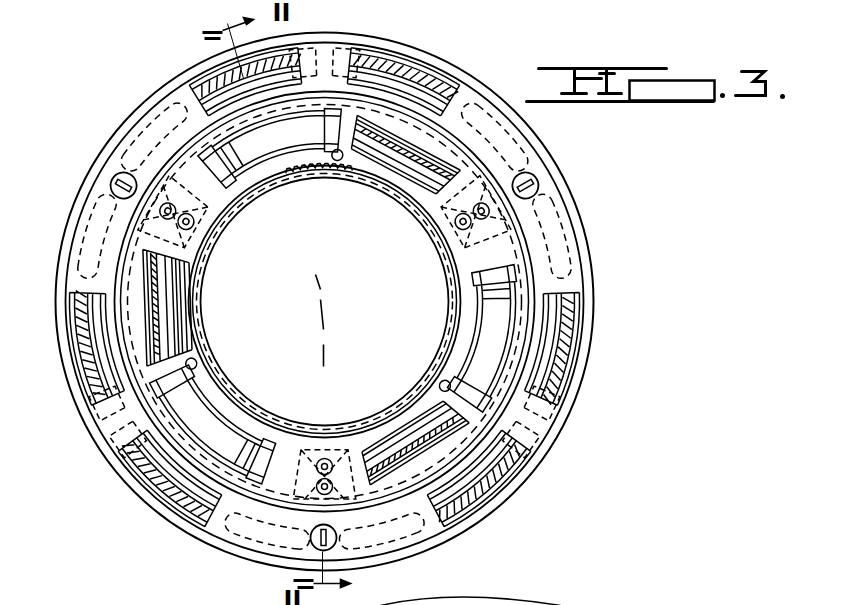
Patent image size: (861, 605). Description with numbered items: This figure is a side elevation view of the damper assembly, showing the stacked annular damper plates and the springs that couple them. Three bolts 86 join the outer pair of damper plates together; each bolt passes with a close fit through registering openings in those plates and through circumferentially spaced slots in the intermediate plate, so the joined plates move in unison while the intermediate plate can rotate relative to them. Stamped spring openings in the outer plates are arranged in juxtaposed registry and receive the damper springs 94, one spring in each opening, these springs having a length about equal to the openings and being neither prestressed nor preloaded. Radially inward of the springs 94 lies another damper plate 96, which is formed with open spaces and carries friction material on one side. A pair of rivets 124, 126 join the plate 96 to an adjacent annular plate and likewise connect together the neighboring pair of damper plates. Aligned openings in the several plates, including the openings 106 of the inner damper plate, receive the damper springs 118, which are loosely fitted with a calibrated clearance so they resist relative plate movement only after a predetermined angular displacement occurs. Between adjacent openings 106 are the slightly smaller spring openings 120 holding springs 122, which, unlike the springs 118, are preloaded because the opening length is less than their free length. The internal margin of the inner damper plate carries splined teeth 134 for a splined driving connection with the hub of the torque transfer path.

The bolts 86 is at (309, 537).
The damper springs 94 is at (210, 86).
The damper plate 96 is at (82, 196).
The openings 106 is at (182, 379).
The damper springs 118 is at (245, 471).
The spring openings 120 is at (182, 352).
The springs 122 is at (159, 267).
The rivet 124 is at (330, 477).
The rivet 126 is at (314, 462).
The splined teeth 134 is at (340, 179).